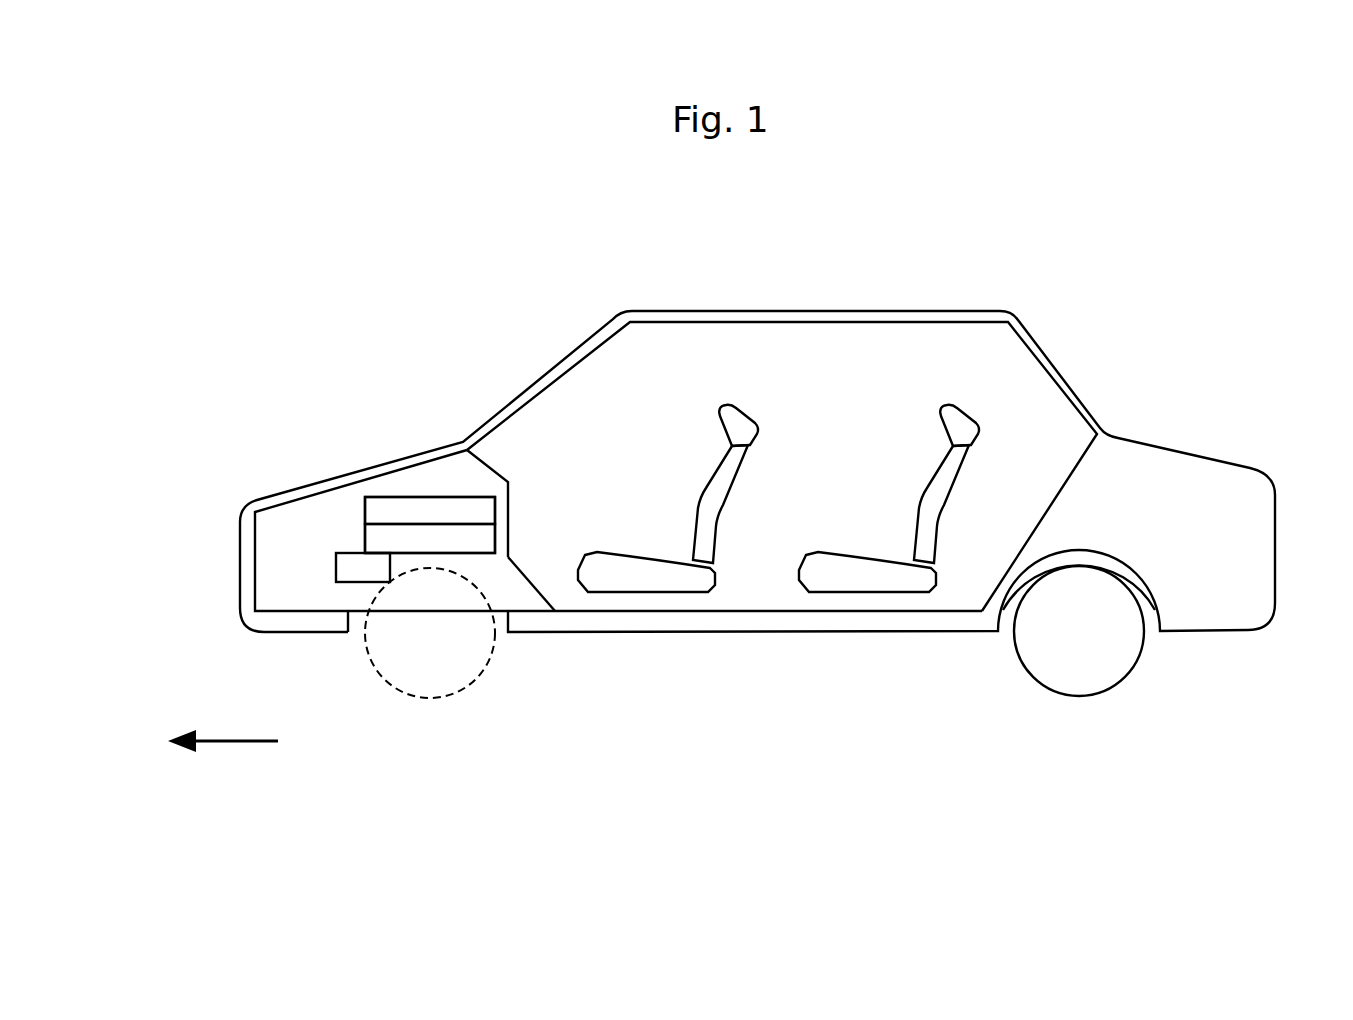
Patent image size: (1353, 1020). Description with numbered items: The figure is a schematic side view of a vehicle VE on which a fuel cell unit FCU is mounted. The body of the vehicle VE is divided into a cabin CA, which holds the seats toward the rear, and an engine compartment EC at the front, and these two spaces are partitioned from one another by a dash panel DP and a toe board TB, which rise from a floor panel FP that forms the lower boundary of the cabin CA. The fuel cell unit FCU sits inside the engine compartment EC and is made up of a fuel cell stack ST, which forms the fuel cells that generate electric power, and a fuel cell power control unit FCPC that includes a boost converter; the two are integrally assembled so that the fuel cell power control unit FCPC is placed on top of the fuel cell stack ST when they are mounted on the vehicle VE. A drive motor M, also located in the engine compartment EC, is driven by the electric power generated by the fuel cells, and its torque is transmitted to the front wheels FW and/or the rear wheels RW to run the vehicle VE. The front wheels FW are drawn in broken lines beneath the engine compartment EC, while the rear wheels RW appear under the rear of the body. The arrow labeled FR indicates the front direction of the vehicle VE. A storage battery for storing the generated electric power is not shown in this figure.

The vehicle VE is at (1183, 452).
The engine compartment EC is at (320, 557).
The cabin CA is at (838, 367).
The floor panel FP is at (748, 612).
The dash panel DP is at (512, 507).
The toe board TB is at (528, 576).
The fuel cell unit FCU is at (362, 505).
The fuel cell power control unit FCPC is at (415, 507).
The fuel cell stack ST is at (412, 540).
The drive motor M is at (343, 575).
The front wheels FW is at (493, 650).
The rear wheels RW is at (1040, 683).
The front direction FR is at (202, 742).